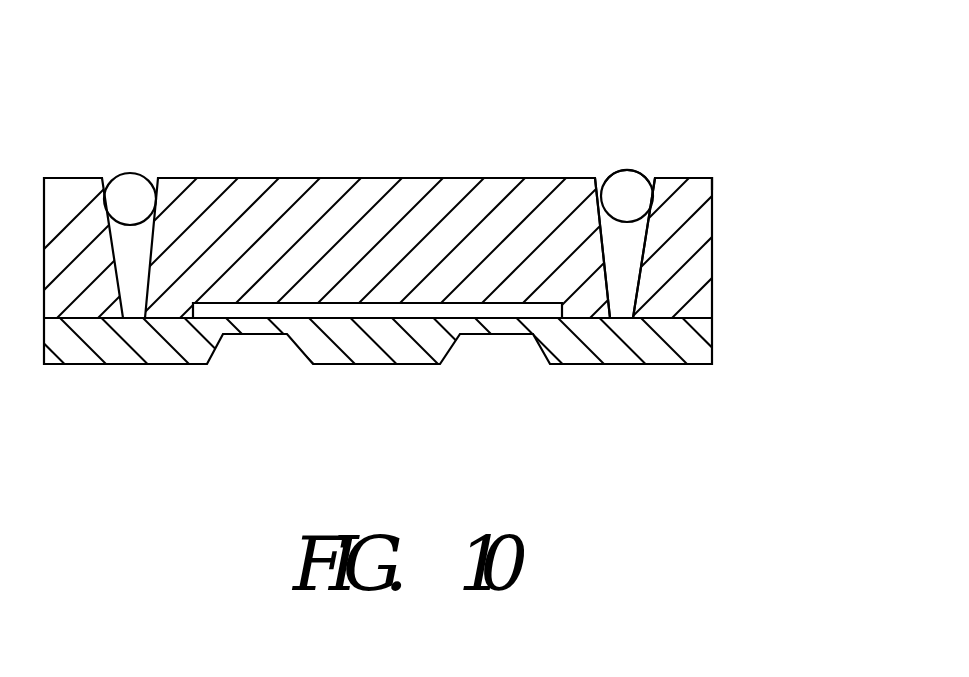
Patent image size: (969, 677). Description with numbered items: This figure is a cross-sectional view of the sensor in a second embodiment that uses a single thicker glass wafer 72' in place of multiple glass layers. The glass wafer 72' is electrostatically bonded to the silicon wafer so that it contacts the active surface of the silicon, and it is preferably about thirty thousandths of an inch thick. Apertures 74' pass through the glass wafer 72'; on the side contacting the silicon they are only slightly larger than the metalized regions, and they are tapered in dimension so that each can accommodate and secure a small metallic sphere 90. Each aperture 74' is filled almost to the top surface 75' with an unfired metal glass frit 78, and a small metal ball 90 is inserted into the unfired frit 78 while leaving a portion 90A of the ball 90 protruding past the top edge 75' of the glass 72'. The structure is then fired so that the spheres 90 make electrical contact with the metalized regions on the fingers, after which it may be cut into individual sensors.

The glass wafer 72' is at (433, 271).
The apertures 74' is at (541, 215).
The top surface 75' is at (721, 110).
The metal glass frit 78 is at (712, 177).
The metallic sphere 90 is at (622, 190).
The protruding portion of the ball 90A is at (633, 157).